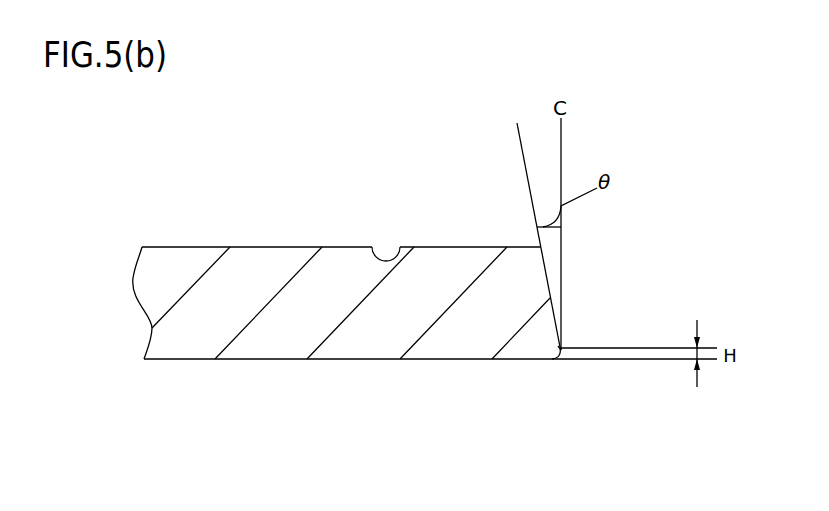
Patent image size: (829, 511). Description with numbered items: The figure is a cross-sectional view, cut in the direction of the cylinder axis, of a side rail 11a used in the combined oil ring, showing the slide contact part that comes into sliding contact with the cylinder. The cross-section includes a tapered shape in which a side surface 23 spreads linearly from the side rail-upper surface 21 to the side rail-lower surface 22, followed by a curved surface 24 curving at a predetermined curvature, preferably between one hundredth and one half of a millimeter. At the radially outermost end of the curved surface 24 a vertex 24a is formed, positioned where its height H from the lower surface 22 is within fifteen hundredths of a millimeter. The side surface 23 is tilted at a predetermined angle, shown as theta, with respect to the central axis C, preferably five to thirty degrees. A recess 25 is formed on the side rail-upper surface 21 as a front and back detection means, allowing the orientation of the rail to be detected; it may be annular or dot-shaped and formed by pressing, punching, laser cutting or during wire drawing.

The side rail 11a is at (403, 241).
The side rail-upper surface 21 is at (440, 247).
The side rail-lower surface 22 is at (530, 360).
The side surface 23 is at (547, 278).
The curved surface 24 is at (555, 360).
The vertex 24a is at (558, 353).
The recess 25 is at (383, 258).